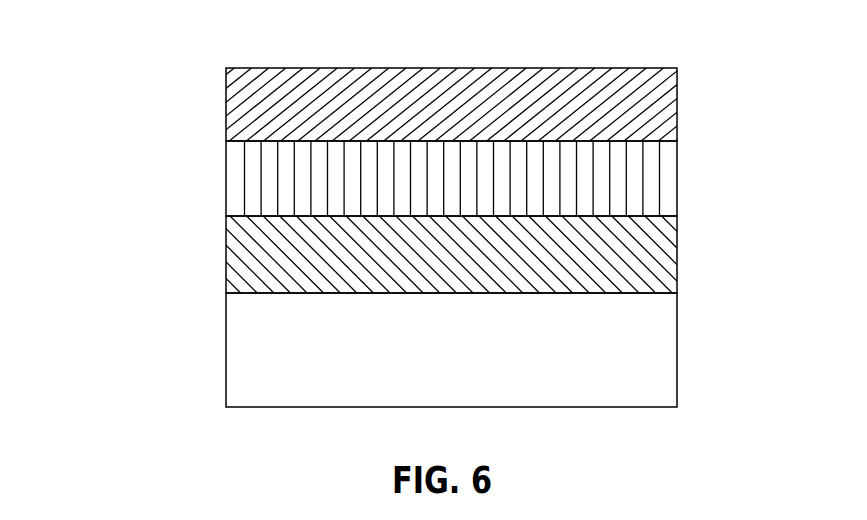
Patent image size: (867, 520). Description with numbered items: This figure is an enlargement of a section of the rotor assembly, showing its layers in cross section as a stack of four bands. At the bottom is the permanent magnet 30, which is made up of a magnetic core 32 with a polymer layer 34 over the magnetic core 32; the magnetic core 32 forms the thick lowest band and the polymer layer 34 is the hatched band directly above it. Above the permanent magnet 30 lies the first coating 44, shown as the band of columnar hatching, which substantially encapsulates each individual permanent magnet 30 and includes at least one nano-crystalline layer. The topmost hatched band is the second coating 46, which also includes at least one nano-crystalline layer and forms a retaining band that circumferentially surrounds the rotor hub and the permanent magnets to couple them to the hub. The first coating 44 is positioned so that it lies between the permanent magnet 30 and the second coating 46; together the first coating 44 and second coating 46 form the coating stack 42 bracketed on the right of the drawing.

The permanent magnet 30 is at (426, 302).
The magnetic core 32 is at (254, 340).
The polymer layer 34 is at (253, 273).
The coating stack 42 is at (426, 123).
The first coating 44 is at (255, 178).
The second coating 46 is at (255, 103).